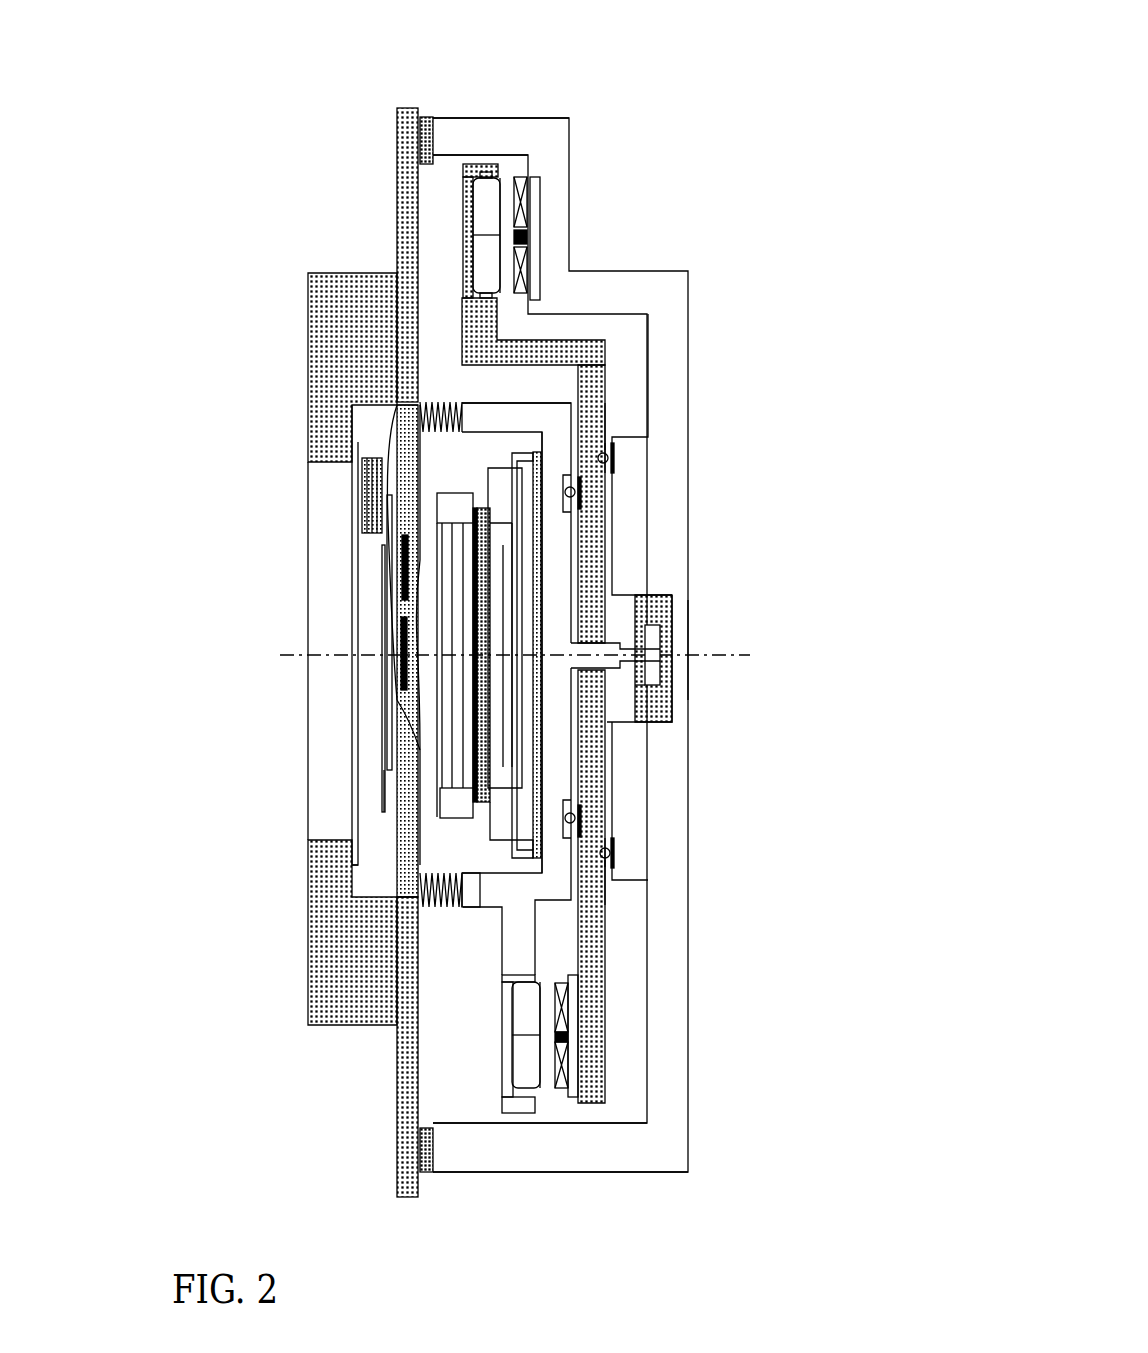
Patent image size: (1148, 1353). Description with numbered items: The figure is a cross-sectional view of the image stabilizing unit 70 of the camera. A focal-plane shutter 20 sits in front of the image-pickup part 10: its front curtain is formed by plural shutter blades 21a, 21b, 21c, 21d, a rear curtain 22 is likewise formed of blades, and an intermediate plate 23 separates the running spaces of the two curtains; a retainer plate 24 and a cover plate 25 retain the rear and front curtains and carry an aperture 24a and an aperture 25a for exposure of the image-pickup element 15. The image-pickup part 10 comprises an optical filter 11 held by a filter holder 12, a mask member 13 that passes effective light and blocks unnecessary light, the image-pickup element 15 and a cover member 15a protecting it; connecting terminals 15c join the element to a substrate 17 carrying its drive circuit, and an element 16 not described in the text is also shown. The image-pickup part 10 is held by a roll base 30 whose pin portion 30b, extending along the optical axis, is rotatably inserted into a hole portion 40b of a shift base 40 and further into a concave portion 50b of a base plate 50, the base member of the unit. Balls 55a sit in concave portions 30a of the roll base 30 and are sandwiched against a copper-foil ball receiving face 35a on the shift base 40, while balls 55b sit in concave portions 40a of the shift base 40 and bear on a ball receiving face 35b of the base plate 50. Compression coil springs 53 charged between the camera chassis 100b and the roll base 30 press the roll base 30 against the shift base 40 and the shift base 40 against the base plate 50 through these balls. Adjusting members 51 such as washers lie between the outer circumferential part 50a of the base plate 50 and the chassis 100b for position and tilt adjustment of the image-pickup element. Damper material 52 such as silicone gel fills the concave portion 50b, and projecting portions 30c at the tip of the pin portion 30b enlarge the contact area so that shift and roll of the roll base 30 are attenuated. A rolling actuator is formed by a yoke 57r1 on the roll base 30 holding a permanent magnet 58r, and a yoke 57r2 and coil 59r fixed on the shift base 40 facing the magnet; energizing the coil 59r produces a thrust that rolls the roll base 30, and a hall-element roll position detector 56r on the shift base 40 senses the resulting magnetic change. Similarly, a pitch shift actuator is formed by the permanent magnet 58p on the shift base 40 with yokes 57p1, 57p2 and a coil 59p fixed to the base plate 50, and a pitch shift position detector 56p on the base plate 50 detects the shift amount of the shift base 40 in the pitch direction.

The image-pickup part 10 is at (482, 507).
The optical filter 11 is at (418, 750).
The filter holder 12 is at (460, 502).
The mask member 13 is at (450, 492).
The image-pickup element 15 is at (515, 746).
The cover member 15a is at (485, 465).
The connecting terminals 15c is at (525, 450).
The rotor bottom plate 16 is at (480, 818).
The substrate 17 is at (548, 727).
The focal-plane shutter 20 is at (376, 620).
The shutter blade 21a is at (384, 735).
The shutter blade 21b is at (388, 690).
The shutter blade 21c is at (394, 620).
The shutter blade 21d is at (380, 462).
The rear curtain 22 is at (378, 590).
The intermediate plate 23 is at (383, 805).
The retainer plate 24 is at (355, 480).
The aperture 24a is at (355, 760).
The cover plate 25 is at (397, 407).
The aperture 25a is at (395, 800).
The roll base 30 is at (581, 940).
The concave portions 30a is at (570, 482).
The pin portion 30b is at (660, 683).
The projecting portions 30c is at (655, 634).
The ball receiving face 35a is at (583, 500).
The ball receiving face 35b is at (616, 465).
The shift base 40 is at (580, 350).
The concave portions 40a is at (612, 437).
The hole portion 40b is at (597, 643).
The base plate 50 is at (660, 278).
The outer circumferential part 50a is at (470, 126).
The concave portion 50b is at (674, 724).
The adjusting members 51 is at (430, 117).
The damper material 52 is at (667, 711).
The compression coil springs 53 is at (448, 392).
The balls 55a is at (578, 492).
The balls 55b is at (608, 458).
The pitch shift position detector 56p is at (523, 237).
The roll position detector 56r is at (568, 1035).
The yoke 57p1 is at (465, 185).
The yoke 57p2 is at (536, 262).
The yoke 57r1 is at (502, 1065).
The yoke 57r2 is at (576, 1080).
The permanent magnet 58p is at (497, 195).
The permanent magnet 58r is at (530, 1082).
The coil 59p is at (527, 180).
The coil 59r is at (548, 1060).
The image stabilizing unit 70 is at (708, 136).
The chassis 100b is at (343, 1005).